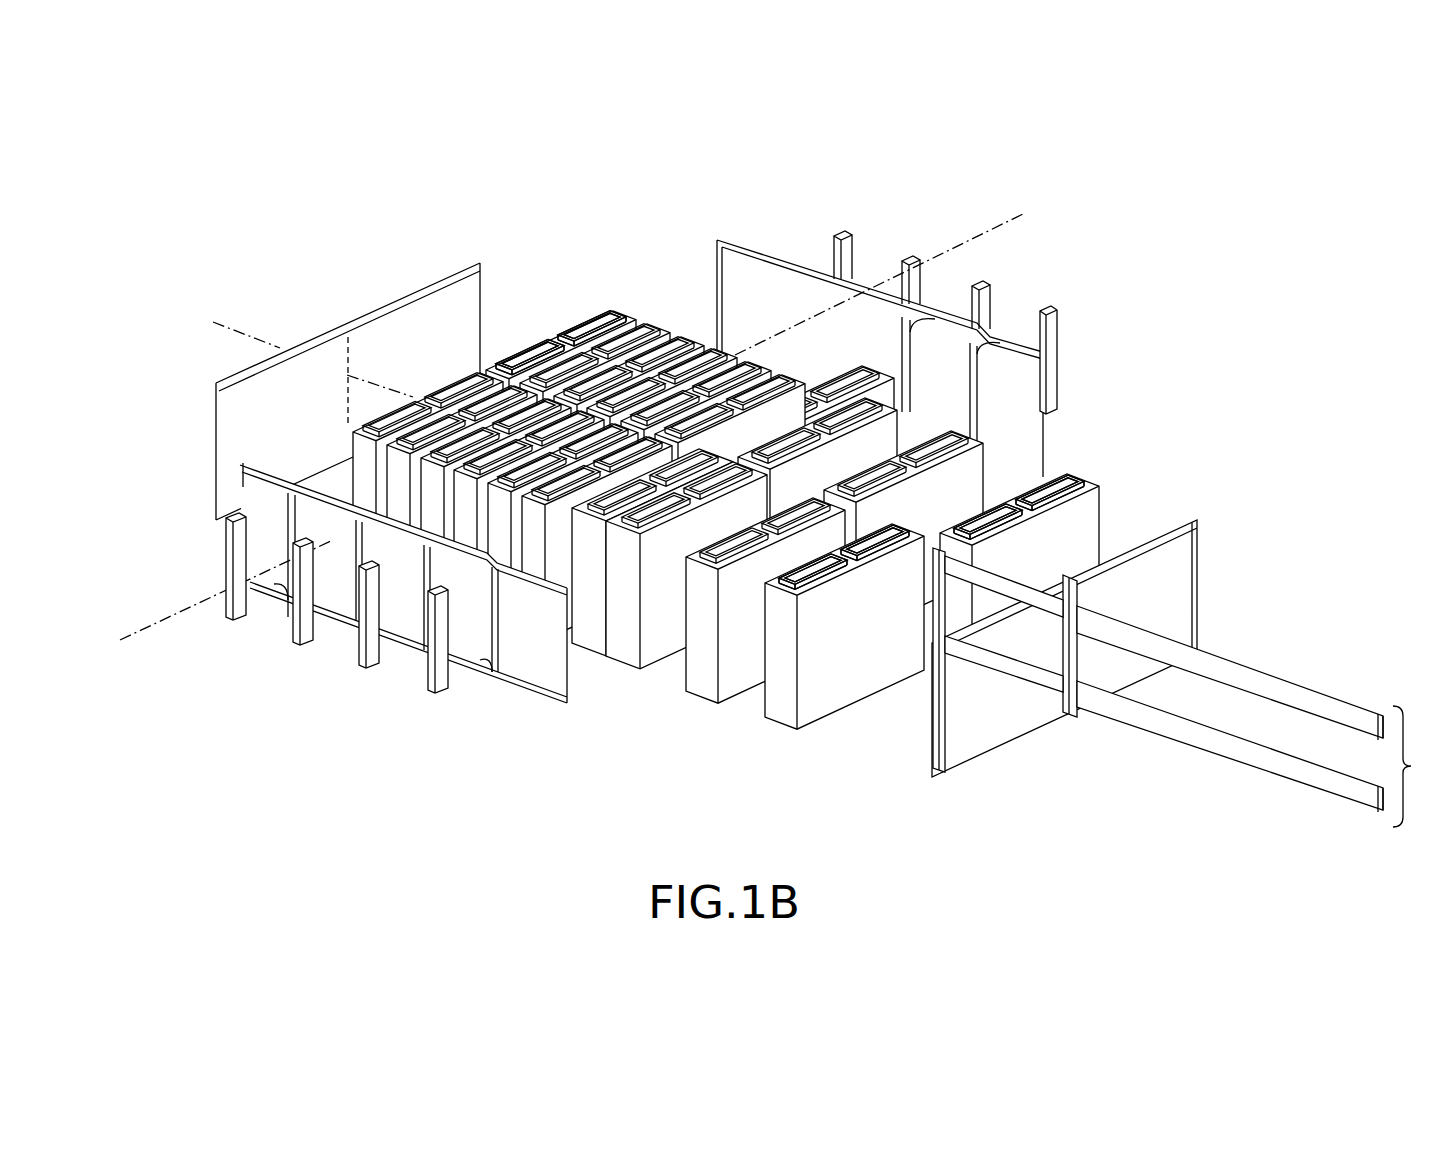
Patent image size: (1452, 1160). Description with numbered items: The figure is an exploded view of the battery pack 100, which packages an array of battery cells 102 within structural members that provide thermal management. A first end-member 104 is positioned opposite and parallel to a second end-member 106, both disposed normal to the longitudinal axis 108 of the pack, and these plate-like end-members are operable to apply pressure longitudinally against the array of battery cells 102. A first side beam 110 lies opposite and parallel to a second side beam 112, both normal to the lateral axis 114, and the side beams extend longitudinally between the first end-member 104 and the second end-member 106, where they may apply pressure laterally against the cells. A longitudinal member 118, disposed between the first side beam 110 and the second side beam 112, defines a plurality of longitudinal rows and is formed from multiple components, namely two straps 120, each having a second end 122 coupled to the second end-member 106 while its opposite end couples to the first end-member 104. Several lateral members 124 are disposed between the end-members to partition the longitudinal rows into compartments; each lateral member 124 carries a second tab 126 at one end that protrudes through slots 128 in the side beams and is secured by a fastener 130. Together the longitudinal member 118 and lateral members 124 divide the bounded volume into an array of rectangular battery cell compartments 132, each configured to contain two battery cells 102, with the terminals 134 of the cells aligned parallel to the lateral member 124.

The battery pack 100 is at (1005, 177).
The battery cells 102 is at (471, 223).
The first end-member 104 is at (378, 300).
The second end-member 106 is at (987, 758).
The longitudinal axis 108 is at (237, 330).
The first side beam 110 is at (505, 690).
The second side beam 112 is at (755, 240).
The lateral axis 114 is at (160, 620).
The longitudinal member 118 is at (1192, 687).
The straps 120 is at (1258, 667).
The second end 122 is at (1384, 710).
The lateral member 124 is at (694, 648).
The second tab 126 is at (683, 662).
The slots 128 is at (922, 325).
The fastener 130 is at (853, 232).
The battery cell compartments 132 is at (169, 395).
The terminals 134 is at (590, 312).